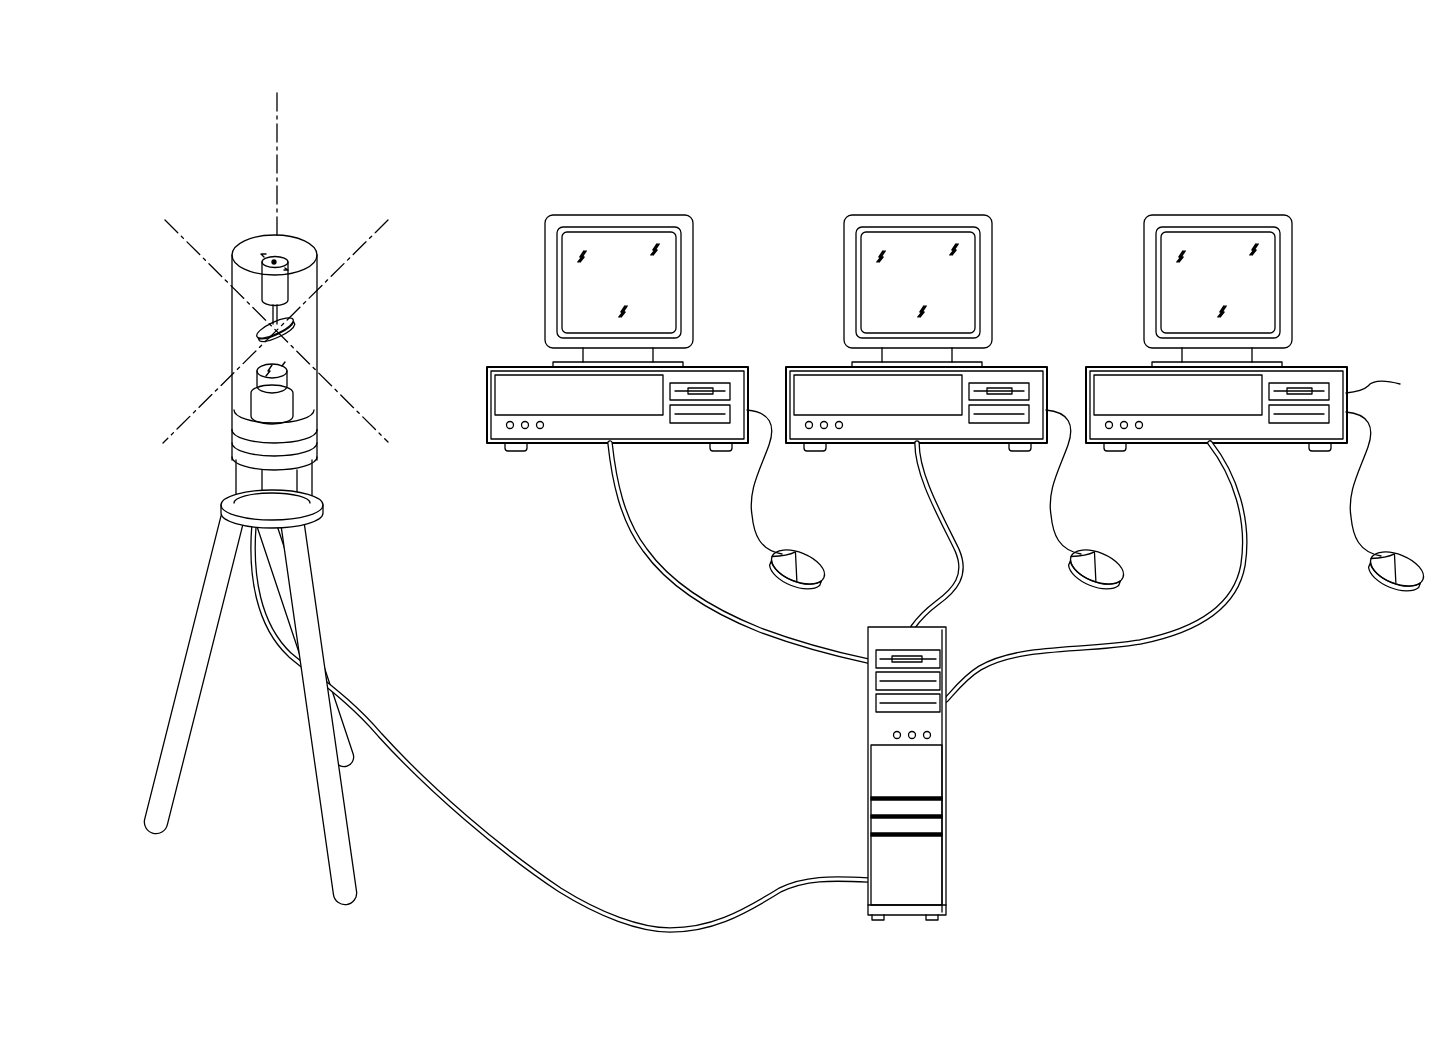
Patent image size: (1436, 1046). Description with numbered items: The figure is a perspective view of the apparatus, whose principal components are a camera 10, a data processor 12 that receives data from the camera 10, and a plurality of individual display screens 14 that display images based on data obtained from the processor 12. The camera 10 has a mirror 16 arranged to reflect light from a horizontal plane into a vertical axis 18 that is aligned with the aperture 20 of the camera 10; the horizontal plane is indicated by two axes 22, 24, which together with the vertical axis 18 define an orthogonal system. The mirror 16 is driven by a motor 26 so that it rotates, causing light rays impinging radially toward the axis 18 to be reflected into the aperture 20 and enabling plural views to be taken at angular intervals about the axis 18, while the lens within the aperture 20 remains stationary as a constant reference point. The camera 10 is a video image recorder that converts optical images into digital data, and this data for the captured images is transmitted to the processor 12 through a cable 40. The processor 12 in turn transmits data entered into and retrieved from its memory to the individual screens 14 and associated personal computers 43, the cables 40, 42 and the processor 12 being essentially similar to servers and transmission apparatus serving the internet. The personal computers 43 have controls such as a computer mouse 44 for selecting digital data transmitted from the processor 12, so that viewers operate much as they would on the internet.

The camera 10 is at (345, 190).
The data processor 12 is at (952, 623).
The display screens 14 is at (616, 200).
The mirror 16 is at (291, 329).
The vertical axis 18 is at (278, 113).
The aperture 20 is at (220, 341).
The axis 22 is at (358, 407).
The axis 24 is at (368, 243).
The motor 26 is at (268, 282).
The cable 40 is at (442, 797).
The cable 42 is at (667, 587).
The personal computers 43 is at (1388, 386).
The computer mouse 44 is at (803, 553).